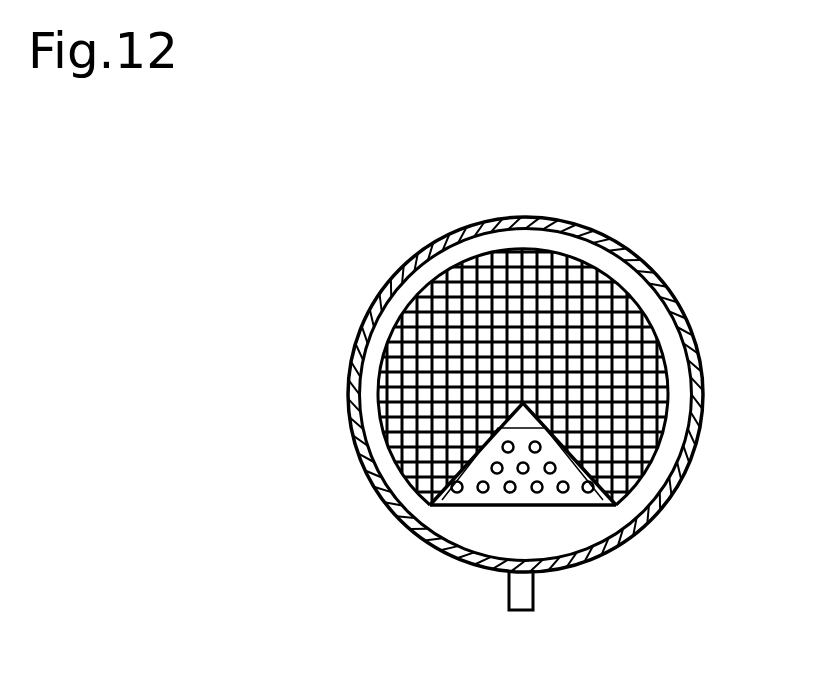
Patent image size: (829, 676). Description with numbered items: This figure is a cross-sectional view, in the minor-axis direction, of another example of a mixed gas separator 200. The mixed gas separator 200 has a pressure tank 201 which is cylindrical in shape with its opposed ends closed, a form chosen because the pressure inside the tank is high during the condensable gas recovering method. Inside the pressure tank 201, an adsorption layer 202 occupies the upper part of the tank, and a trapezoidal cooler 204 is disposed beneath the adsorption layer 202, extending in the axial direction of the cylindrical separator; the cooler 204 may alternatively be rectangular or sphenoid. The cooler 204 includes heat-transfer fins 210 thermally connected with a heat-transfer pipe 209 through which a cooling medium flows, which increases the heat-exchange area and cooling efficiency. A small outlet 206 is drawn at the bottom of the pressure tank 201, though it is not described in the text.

The mixed gas separator 200 is at (378, 252).
The pressure tank 201 is at (607, 238).
The adsorption layer 202 is at (647, 327).
The gas cooler 204 is at (455, 500).
The inlet pipe 206 is at (533, 591).
The heat-transfer pipe 209 is at (484, 493).
The heat-transfer fins 210 is at (603, 510).